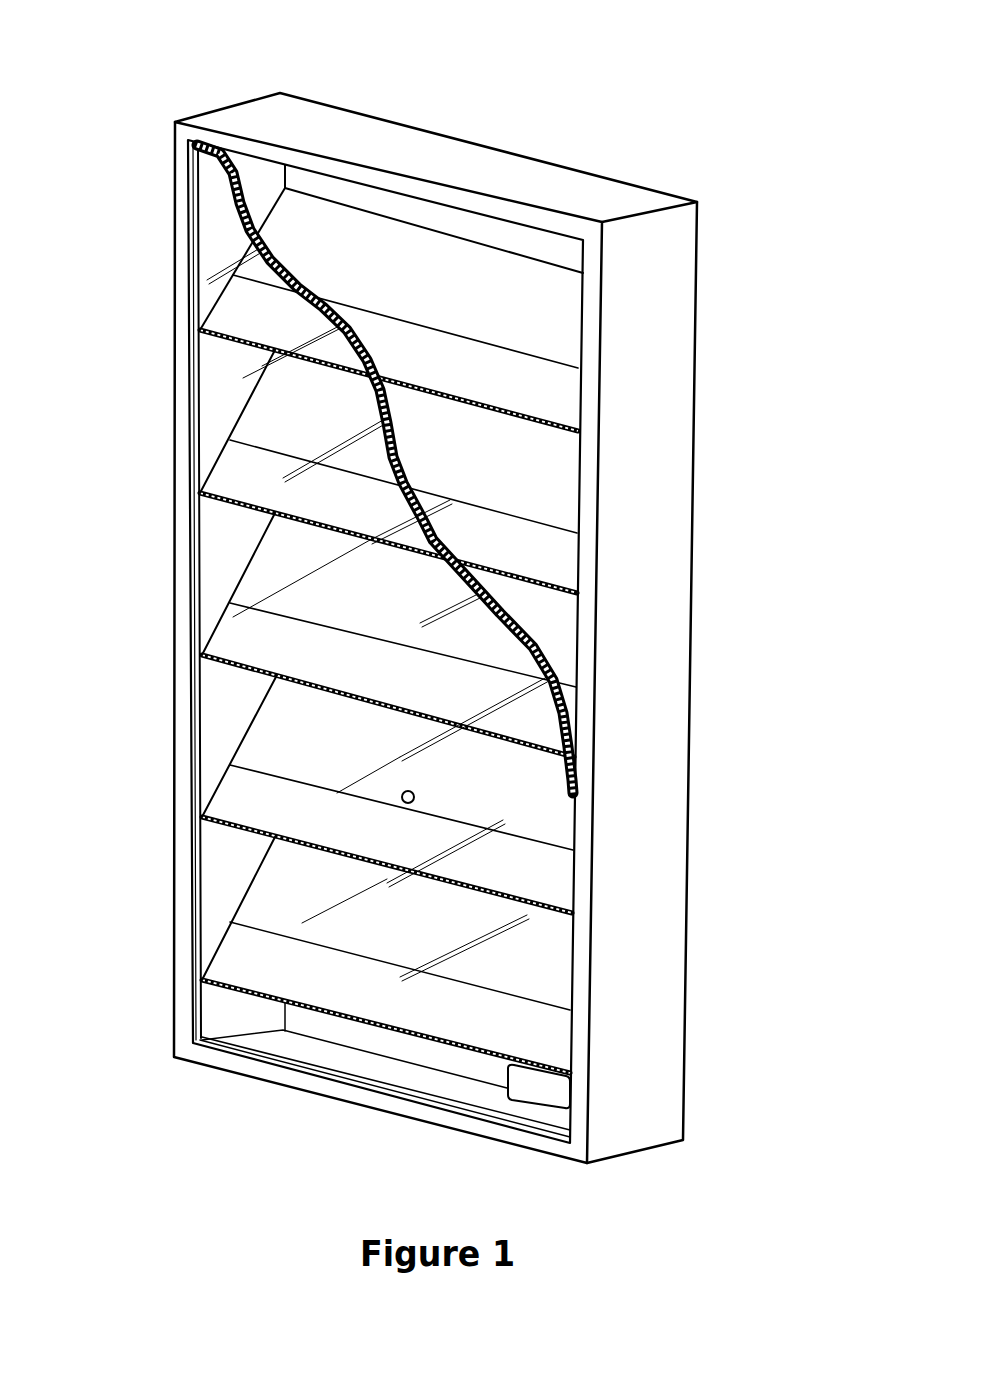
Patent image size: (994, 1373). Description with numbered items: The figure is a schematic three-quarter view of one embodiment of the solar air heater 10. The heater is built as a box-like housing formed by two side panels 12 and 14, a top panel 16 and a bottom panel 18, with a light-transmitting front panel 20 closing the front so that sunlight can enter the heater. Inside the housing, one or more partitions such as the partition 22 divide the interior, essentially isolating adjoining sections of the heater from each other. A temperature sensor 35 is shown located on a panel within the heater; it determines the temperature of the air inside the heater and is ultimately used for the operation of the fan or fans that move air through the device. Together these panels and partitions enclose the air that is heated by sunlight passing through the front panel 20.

The solar air heater 10 is at (490, 581).
The side panel 12 is at (636, 435).
The side panel 14 is at (173, 274).
The top panel 16 is at (470, 176).
The bottom panel 18 is at (236, 1078).
The light-transmitting front panel 20 is at (505, 777).
The partition 22 is at (528, 318).
The temperature sensor 35 is at (392, 797).